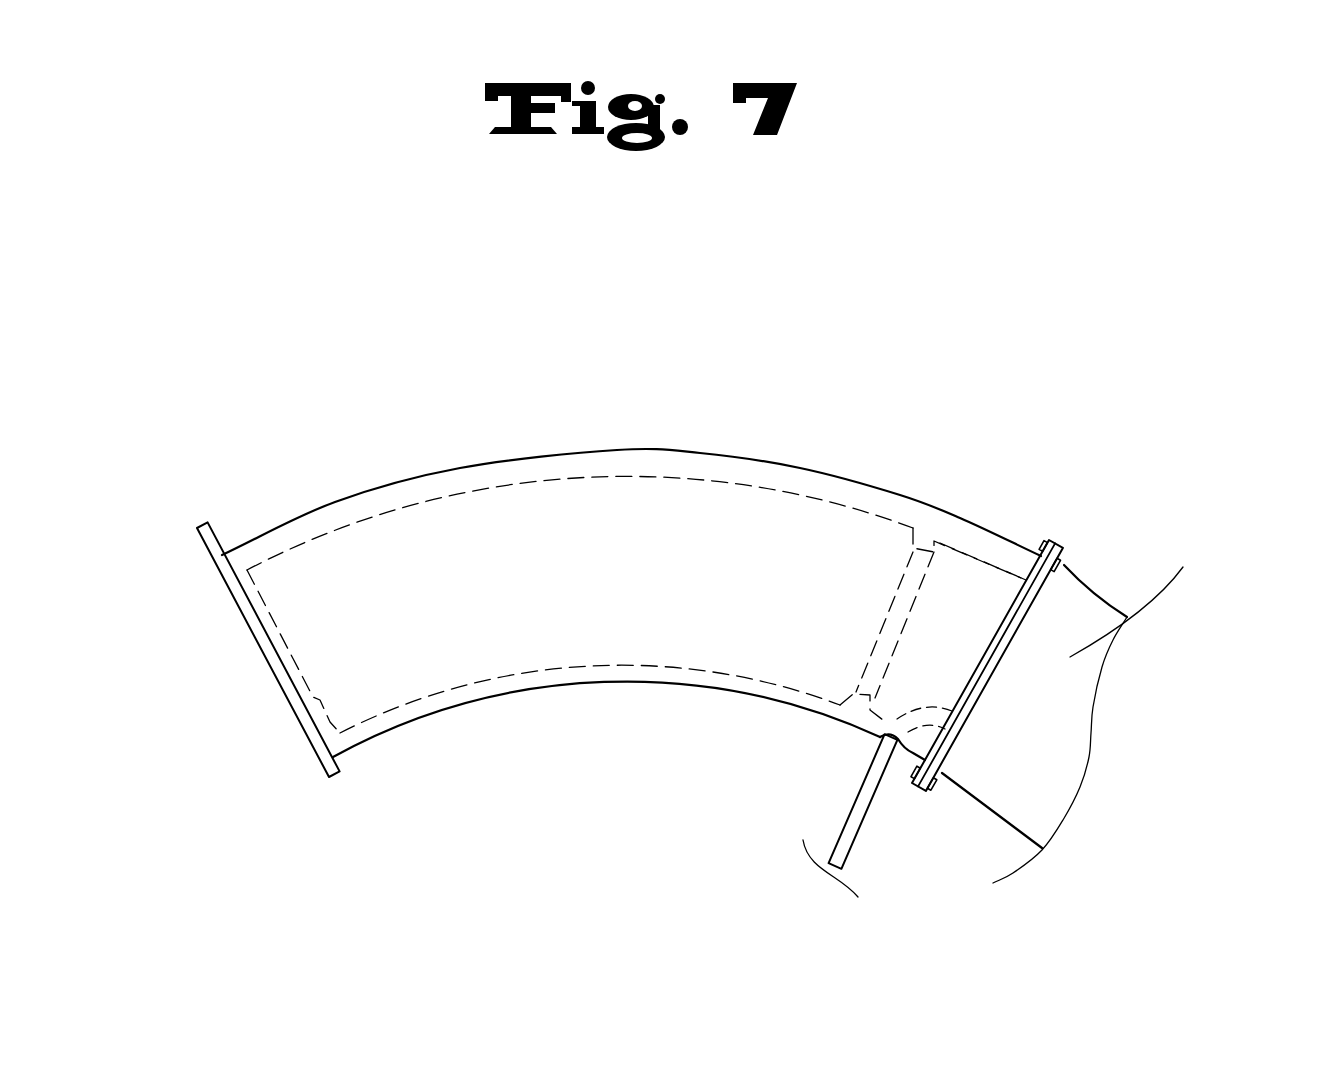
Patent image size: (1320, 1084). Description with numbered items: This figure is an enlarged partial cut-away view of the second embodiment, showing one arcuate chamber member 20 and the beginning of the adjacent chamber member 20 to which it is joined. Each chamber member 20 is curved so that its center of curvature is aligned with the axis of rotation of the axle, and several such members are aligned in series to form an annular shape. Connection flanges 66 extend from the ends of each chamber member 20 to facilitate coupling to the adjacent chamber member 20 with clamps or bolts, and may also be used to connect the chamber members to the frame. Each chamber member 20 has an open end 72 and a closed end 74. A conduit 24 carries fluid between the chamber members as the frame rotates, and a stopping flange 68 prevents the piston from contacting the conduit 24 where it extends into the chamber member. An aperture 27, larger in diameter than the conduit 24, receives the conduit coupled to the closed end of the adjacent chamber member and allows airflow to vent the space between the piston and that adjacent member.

The chamber member 20 is at (530, 527).
The conduit 24 is at (868, 802).
The aperture 27 is at (880, 738).
The connection flange 66 is at (209, 543).
The stopping flange 68 is at (898, 580).
The open end 72 is at (993, 607).
The closed end 74 is at (242, 622).